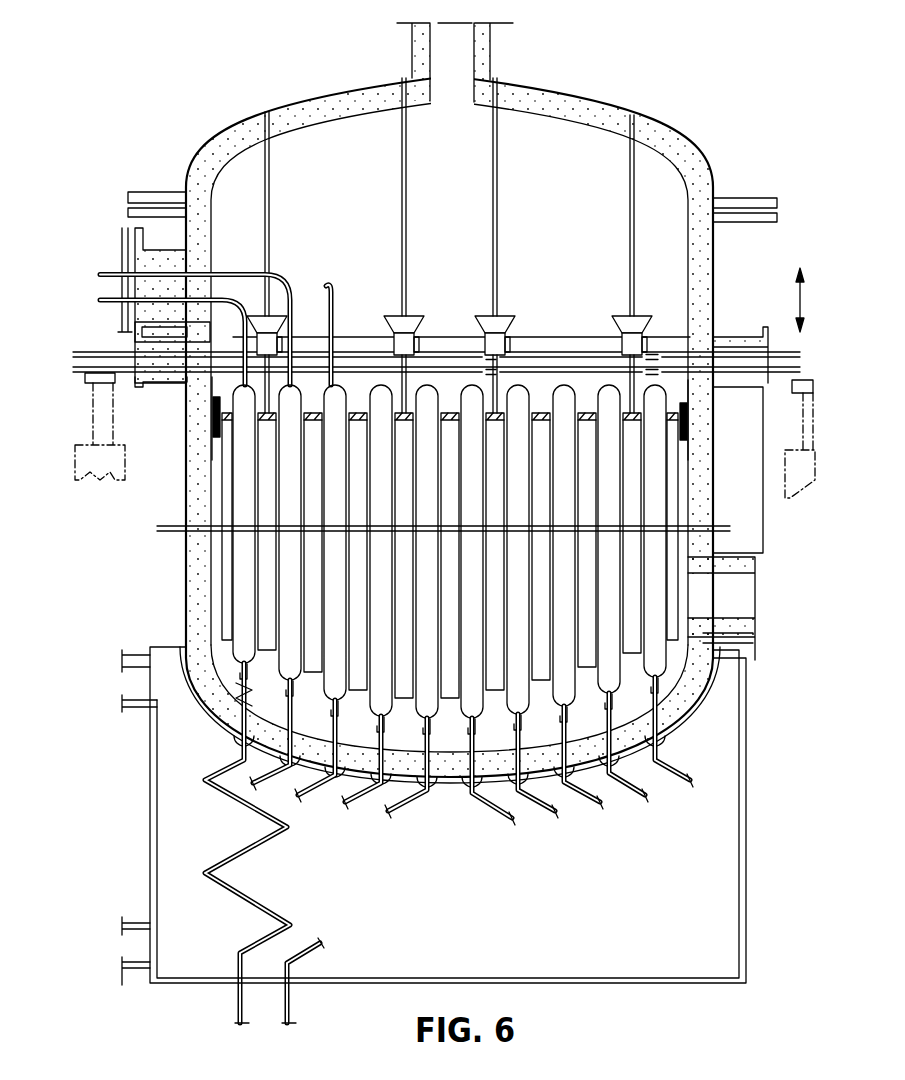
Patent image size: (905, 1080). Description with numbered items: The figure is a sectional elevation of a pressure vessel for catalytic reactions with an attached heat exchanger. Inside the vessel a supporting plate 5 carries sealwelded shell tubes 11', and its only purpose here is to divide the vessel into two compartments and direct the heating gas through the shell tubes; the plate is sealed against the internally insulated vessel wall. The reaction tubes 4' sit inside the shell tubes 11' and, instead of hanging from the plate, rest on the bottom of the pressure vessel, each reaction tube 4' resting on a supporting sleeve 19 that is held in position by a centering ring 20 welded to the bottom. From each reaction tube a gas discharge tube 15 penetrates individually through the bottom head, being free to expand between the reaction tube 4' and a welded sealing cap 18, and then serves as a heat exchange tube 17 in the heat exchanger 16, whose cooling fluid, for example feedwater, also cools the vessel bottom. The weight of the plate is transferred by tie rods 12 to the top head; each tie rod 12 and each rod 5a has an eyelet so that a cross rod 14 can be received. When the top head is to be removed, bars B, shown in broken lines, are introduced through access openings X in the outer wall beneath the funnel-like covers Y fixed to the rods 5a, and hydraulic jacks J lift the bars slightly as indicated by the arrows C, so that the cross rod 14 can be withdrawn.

The reaction tube 4' is at (502, 555).
The supporting plate 5 is at (542, 418).
The rod 5a is at (635, 393).
The shell tube 11' is at (498, 559).
The tie rod 12 is at (637, 232).
The cross rod 14 is at (550, 345).
The gas discharge tube 15 is at (235, 716).
The heat exchanger 16 is at (746, 800).
The heat exchange tube 17 is at (348, 802).
The welded sealing cap 18 is at (236, 736).
The supporting sleeve 19 is at (230, 688).
The centering ring 20 is at (667, 717).
The access opening X is at (133, 350).
The funnel-like cover Y is at (630, 327).
The arrow C is at (798, 302).
The hydraulic jack J is at (78, 468).
The bar B is at (800, 366).